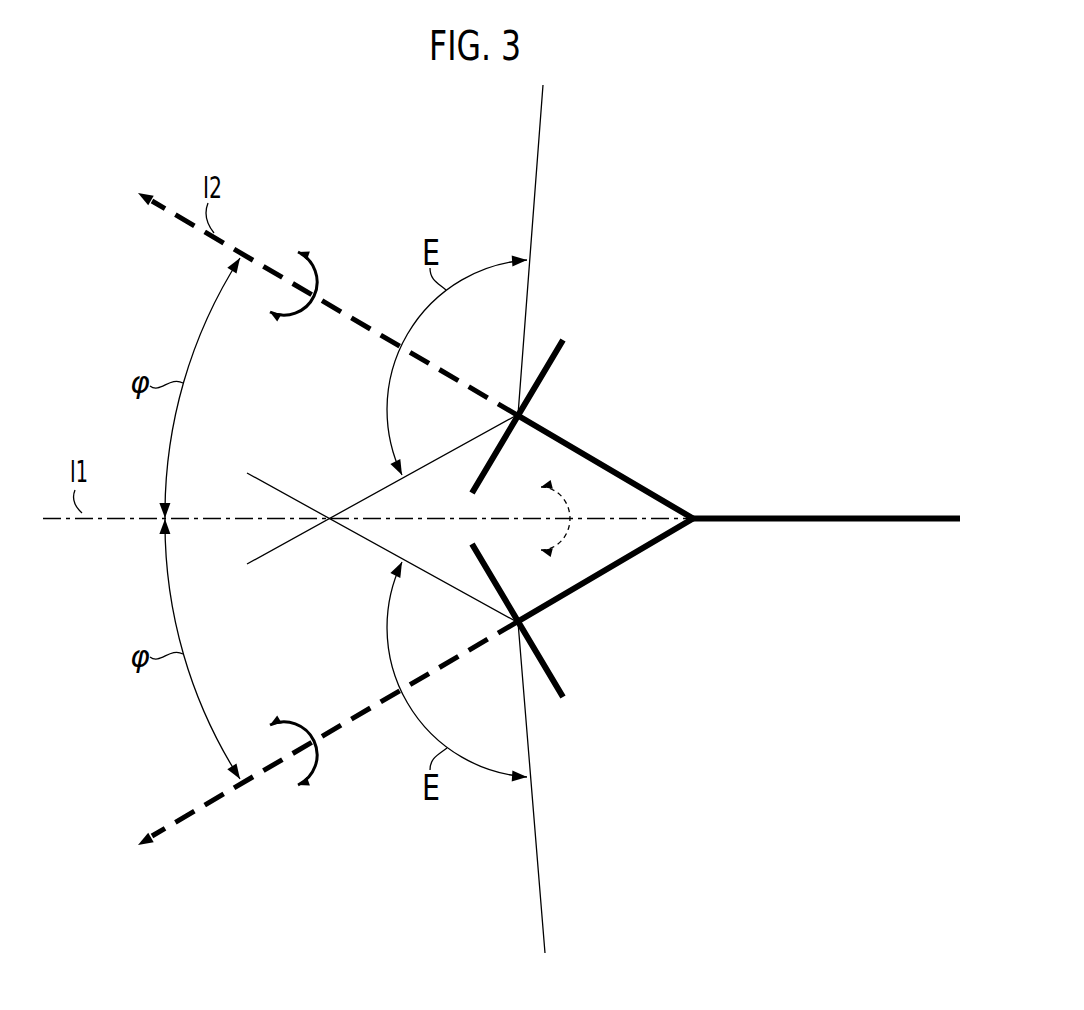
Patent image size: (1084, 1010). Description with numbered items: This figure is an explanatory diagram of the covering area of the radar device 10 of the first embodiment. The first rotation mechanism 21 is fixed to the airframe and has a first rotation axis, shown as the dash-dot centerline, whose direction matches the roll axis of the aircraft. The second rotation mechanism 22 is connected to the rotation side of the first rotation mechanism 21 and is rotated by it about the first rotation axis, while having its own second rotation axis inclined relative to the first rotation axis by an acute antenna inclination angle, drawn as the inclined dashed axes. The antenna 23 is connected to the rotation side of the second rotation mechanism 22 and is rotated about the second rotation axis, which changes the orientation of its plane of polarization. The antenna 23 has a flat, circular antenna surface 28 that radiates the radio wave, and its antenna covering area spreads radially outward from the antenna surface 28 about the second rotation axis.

The radar device 10 is at (716, 519).
The first rotation mechanism 21 is at (838, 516).
The second rotation mechanism 22 is at (627, 563).
The antenna 23 is at (560, 688).
The antenna surface 28 is at (552, 690).